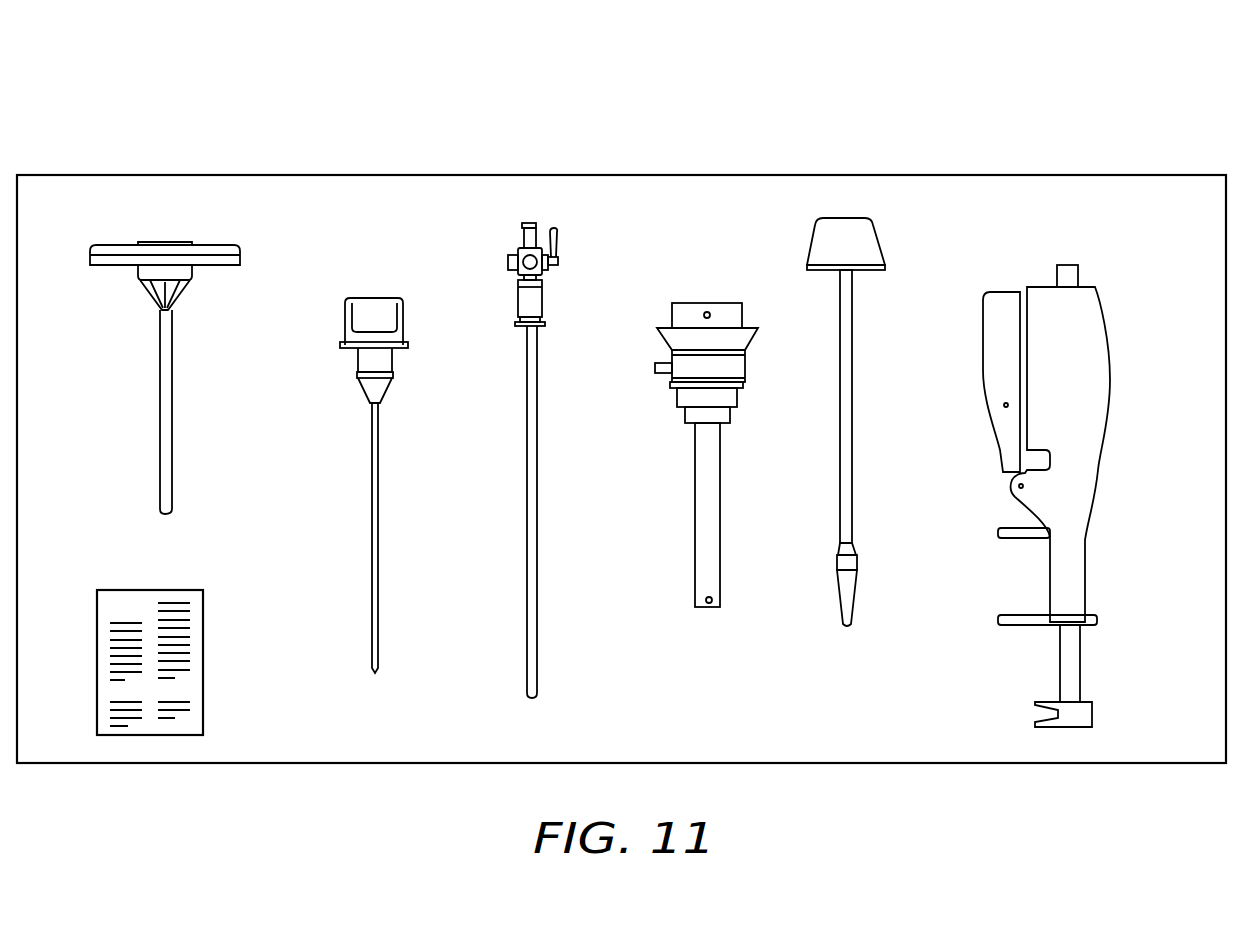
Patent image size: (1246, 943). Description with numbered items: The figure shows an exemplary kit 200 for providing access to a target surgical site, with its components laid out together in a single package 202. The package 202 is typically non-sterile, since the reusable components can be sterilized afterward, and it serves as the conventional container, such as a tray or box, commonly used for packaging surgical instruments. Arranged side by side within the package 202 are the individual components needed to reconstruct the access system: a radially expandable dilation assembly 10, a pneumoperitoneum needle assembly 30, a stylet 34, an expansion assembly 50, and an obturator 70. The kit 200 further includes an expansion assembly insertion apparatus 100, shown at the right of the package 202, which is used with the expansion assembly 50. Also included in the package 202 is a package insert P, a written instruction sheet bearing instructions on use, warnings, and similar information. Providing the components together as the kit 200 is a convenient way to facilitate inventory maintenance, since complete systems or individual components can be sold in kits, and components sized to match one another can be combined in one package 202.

The kit 200 is at (140, 112).
The package 202 is at (462, 175).
The radially expandable dilation assembly 10 is at (165, 385).
The pneumoperitoneum needle assembly 30 is at (372, 482).
The stylet 34 is at (537, 432).
The expansion assembly 50 is at (705, 490).
The obturator 70 is at (852, 422).
The expansion assembly insertion apparatus 100 is at (1083, 455).
The package insert P is at (205, 713).